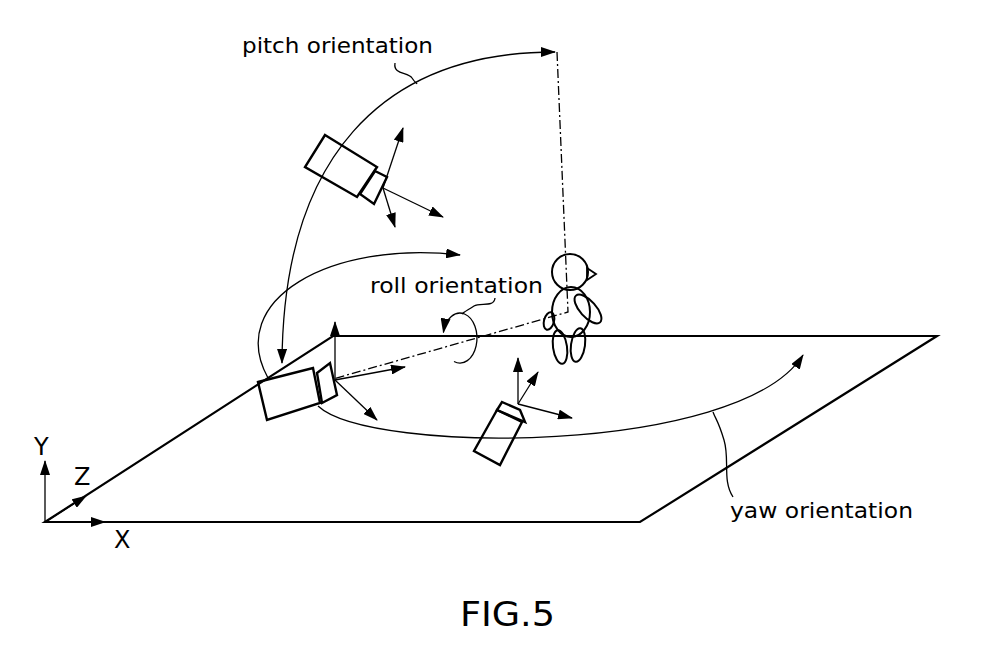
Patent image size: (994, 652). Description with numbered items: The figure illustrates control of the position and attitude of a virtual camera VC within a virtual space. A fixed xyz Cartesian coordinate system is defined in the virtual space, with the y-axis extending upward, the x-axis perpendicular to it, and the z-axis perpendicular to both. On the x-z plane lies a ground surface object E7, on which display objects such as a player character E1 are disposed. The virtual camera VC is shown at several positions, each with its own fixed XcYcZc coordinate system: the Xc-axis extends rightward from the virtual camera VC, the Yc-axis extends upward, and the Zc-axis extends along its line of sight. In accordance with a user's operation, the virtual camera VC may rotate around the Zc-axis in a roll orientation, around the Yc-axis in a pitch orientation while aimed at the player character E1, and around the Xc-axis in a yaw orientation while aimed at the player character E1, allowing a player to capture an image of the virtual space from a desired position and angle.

The virtual camera VC is at (324, 137).
The player character E1 is at (590, 263).
The ground surface object E7 is at (808, 336).